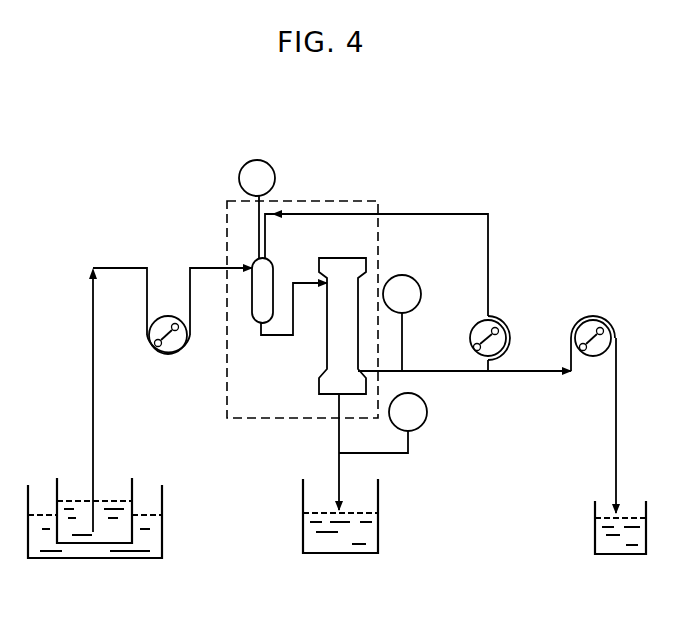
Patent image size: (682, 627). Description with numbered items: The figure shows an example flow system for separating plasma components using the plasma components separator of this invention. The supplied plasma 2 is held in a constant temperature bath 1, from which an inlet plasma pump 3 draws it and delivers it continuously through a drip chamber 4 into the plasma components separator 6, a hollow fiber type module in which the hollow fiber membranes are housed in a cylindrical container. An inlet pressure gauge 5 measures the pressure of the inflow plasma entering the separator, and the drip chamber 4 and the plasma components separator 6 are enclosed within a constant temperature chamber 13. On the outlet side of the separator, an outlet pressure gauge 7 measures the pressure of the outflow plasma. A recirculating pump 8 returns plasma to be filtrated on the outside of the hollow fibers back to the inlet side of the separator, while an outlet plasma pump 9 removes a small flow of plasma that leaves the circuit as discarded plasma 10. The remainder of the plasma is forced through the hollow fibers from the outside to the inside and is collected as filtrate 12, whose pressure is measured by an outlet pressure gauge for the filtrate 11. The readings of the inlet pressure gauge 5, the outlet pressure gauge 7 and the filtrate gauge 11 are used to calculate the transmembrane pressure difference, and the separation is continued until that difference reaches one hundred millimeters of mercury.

The constant temperature bath 1 is at (153, 552).
The supplied plasma 2 is at (110, 538).
The inlet plasma pump 3 is at (177, 353).
The drip chamber 4 is at (273, 259).
The inlet pressure gauge 5 is at (272, 163).
The plasma components separator 6 is at (340, 257).
The outlet pressure gauge 7 is at (420, 285).
The recirculating pump 8 is at (468, 343).
The outlet plasma pump 9 is at (617, 342).
The discarded plasma 10 is at (627, 555).
The outlet pressure gauge for the filtrate 11 is at (428, 421).
The filtrate 12 is at (349, 553).
The constant temperature chamber 13 is at (348, 199).